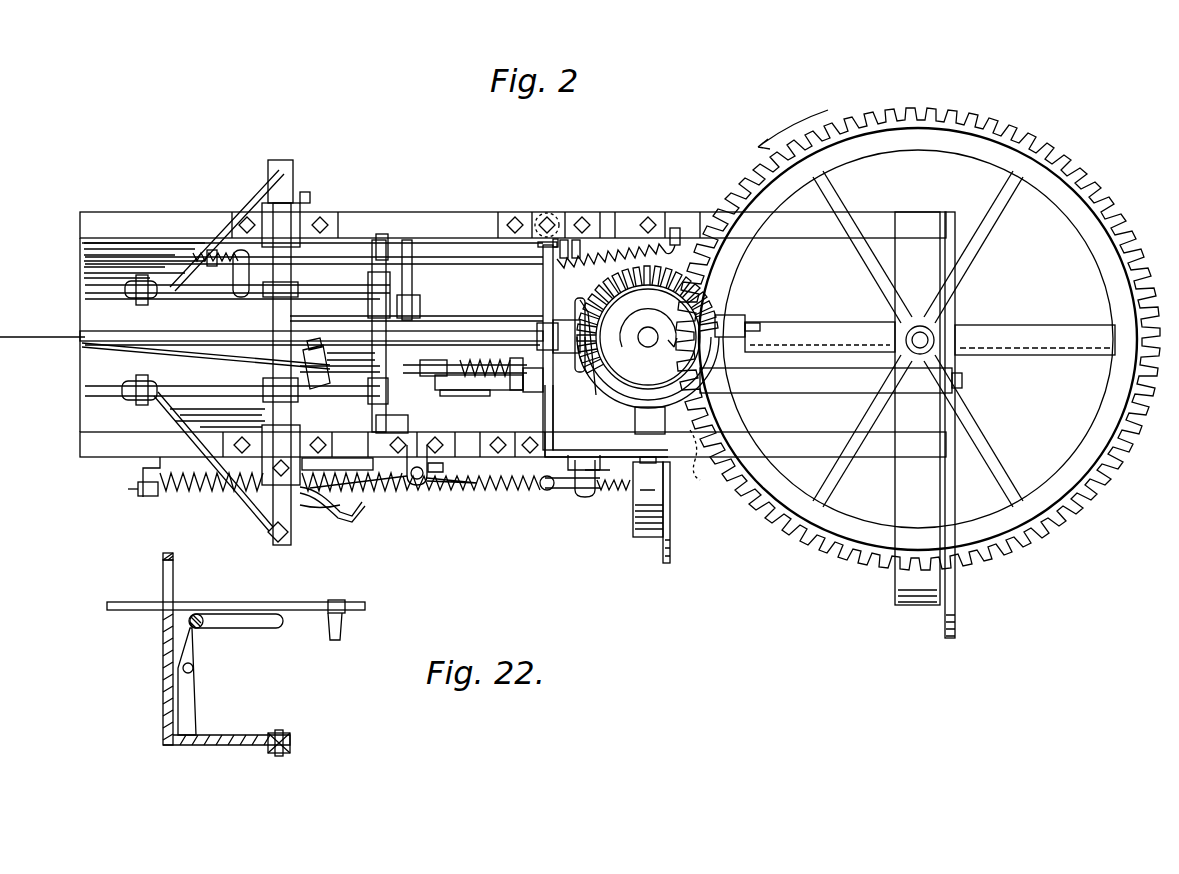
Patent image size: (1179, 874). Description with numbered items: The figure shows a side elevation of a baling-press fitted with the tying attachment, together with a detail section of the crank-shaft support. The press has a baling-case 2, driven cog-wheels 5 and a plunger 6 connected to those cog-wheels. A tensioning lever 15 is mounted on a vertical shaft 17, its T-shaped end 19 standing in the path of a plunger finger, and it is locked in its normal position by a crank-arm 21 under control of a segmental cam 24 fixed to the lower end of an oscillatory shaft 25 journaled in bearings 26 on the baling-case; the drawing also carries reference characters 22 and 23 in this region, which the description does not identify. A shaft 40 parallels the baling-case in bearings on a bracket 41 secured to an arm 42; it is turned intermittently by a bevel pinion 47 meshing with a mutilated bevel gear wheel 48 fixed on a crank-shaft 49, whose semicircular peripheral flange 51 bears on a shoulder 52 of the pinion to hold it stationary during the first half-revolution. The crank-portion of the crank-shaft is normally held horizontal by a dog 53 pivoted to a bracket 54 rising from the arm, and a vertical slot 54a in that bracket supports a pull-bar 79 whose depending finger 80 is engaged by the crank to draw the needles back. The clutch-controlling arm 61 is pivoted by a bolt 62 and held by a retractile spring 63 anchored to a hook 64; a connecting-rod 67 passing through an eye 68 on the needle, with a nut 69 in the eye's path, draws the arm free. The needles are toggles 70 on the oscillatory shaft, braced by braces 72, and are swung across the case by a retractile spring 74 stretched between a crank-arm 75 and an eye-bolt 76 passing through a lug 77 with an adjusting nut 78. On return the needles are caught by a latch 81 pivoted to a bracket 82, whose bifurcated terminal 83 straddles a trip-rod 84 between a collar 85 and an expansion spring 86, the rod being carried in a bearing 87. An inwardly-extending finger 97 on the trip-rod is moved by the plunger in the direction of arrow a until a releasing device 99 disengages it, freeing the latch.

In FIG. 2, the baling-case 2 is at (130, 222).
In FIG. 2, the driven cog-wheels 5 is at (937, 135).
In FIG. 2, the plunger 6 is at (335, 325).
In FIG. 2, the lever 15 is at (421, 305).
In FIG. 2, the vertical shaft 17 is at (410, 250).
In FIG. 2, the T-shaped end 19 is at (382, 240).
In FIG. 2, the crank-arm 21 is at (440, 480).
In FIG. 2, the spring 22 is at (462, 493).
In FIG. 2, the lever 23 is at (410, 490).
In FIG. 2, the segmental cam 24 is at (343, 527).
In FIG. 2, the oscillatory shaft 25 is at (280, 542).
In FIG. 2, the bearings 26 is at (286, 368).
In FIG. 2, the shaft 40 is at (85, 338).
In FIG. 2, the bracket 41 is at (568, 455).
In FIG. 2, the arm 42 is at (645, 532).
In FIG. 22, the arm 42 is at (292, 745).
In FIG. 2, the bevel pinion 47 is at (585, 305).
In FIG. 2, the mutilated bevel gear wheel 48 is at (648, 337).
In FIG. 2, the crank-shaft 49 is at (650, 343).
In FIG. 22, the crank-shaft 49 is at (247, 624).
In FIG. 2, the semicircular peripheral flange 51 is at (688, 435).
In FIG. 2, the shoulder 52 is at (562, 397).
In FIG. 2, the dog 53 is at (560, 422).
In FIG. 22, the dog 53 is at (197, 700).
In FIG. 2, the bracket 54 is at (545, 298).
In FIG. 22, the bracket 54 is at (163, 660).
In FIG. 22, the vertical slot 54a is at (163, 575).
In FIG. 2, the arm 61 is at (580, 240).
In FIG. 2, the bolt 62 is at (547, 218).
In FIG. 2, the retractile spring 63 is at (612, 258).
In FIG. 2, the hook 64 is at (676, 228).
In FIG. 2, the connecting-rod 67 is at (470, 257).
In FIG. 2, the eye 68 is at (240, 252).
In FIG. 2, the nut 69 is at (208, 255).
In FIG. 2, the toggles 70 is at (122, 293).
In FIG. 2, the braces 72 is at (272, 178).
In FIG. 2, the retractile spring 74 is at (190, 495).
In FIG. 2, the crank-arm 75 is at (138, 492).
In FIG. 2, the eye-bolt 76 is at (548, 491).
In FIG. 2, the lug 77 is at (588, 497).
In FIG. 2, the nut 78 is at (600, 487).
In FIG. 2, the pull-bar 79 is at (465, 330).
In FIG. 22, the pull-bar 79 is at (366, 606).
In FIG. 2, the depending finger 80 is at (735, 325).
In FIG. 22, the depending finger 80 is at (337, 610).
In FIG. 2, the latch 81 is at (427, 383).
In FIG. 2, the bracket 82 is at (485, 391).
In FIG. 2, the bifurcated terminal 83 is at (452, 345).
In FIG. 2, the trip-rod 84 is at (82, 352).
In FIG. 2, the collar 85 is at (311, 347).
In FIG. 2, the expansion spring 86 is at (484, 360).
In FIG. 2, the bearing 87 is at (518, 358).
In FIG. 2, the inwardly-extending finger 97 is at (300, 370).
In FIG. 2, the releasing device 99 is at (346, 388).
In FIG. 2, the arrow a is at (594, 178).